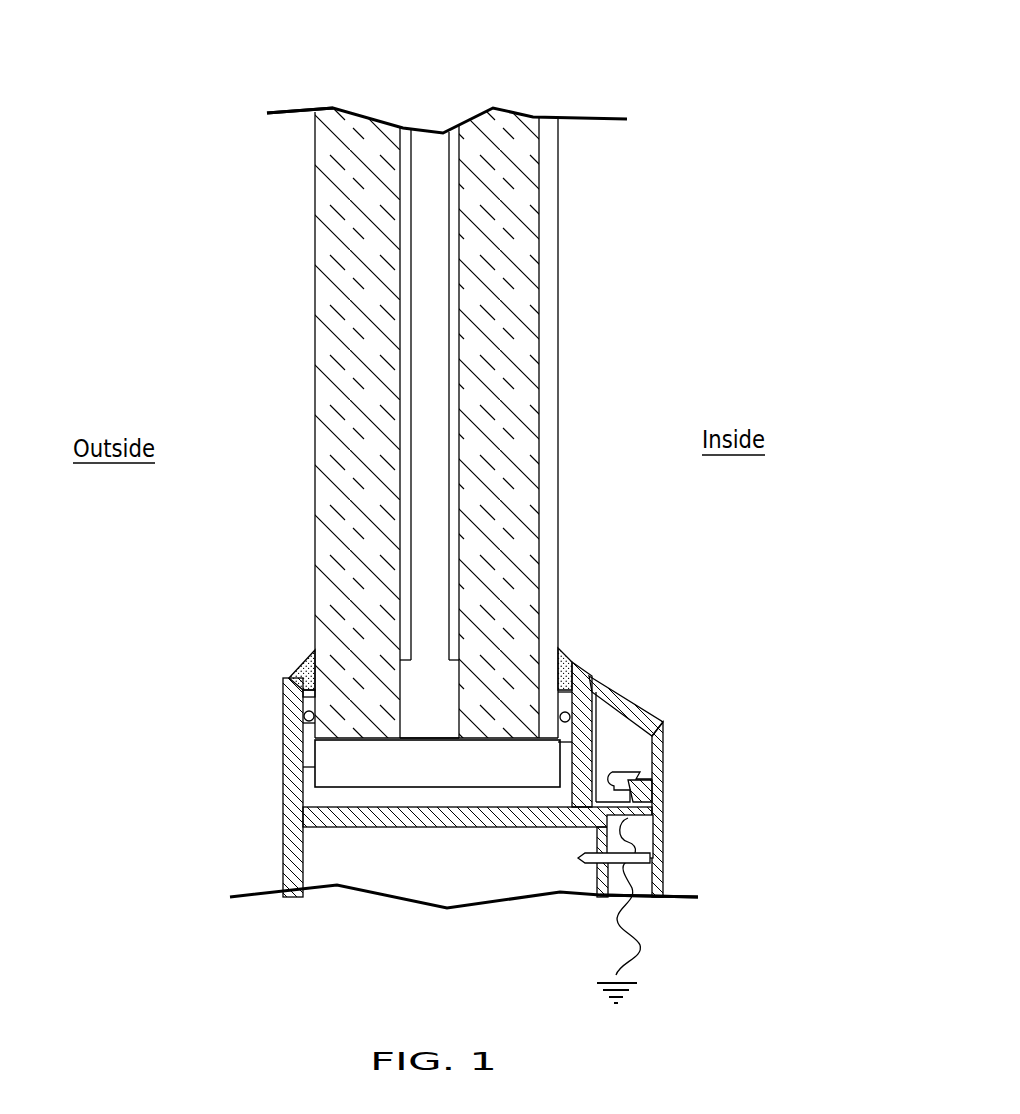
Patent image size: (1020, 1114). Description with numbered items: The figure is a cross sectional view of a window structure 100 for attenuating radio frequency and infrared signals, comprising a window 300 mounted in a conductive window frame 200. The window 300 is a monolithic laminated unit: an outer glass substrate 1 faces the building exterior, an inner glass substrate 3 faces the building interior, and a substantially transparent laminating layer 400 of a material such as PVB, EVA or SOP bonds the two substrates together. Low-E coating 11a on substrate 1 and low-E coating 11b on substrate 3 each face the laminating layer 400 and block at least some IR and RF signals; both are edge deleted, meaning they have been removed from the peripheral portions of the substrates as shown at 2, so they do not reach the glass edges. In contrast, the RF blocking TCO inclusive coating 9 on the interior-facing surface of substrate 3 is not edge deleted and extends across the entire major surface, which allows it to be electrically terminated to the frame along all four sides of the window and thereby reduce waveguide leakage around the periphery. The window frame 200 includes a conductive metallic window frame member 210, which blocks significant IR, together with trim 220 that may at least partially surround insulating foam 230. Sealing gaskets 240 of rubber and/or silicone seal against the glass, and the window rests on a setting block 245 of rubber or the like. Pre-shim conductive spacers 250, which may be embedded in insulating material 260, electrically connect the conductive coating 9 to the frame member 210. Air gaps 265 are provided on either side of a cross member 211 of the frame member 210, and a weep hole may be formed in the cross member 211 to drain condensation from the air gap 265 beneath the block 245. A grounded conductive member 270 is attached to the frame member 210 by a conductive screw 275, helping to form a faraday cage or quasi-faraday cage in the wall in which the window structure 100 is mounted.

The window structure 100 is at (148, 180).
The window 300 is at (628, 356).
The window frame 200 is at (768, 694).
The outer glass substrate 1 is at (334, 466).
The inner glass substrate 3 is at (517, 508).
The edge deletion 2 is at (448, 698).
The laminating layer 400 is at (433, 293).
The low-E coating 11a is at (404, 131).
The low-E coating 11b is at (455, 132).
The TCO inclusive coating 9 is at (547, 215).
The window frame member 210 is at (295, 690).
The cross member 211 is at (445, 818).
The trim 220 is at (628, 705).
The insulating foam 230 is at (632, 750).
The sealing gasket 240 is at (301, 664).
The setting block 245 is at (346, 770).
The pre-shim conductive spacer 250 is at (303, 716).
The insulating material 260 is at (300, 697).
The air gap 265 is at (355, 797).
The conductive member 270 is at (628, 818).
The conductive screw 275 is at (648, 858).